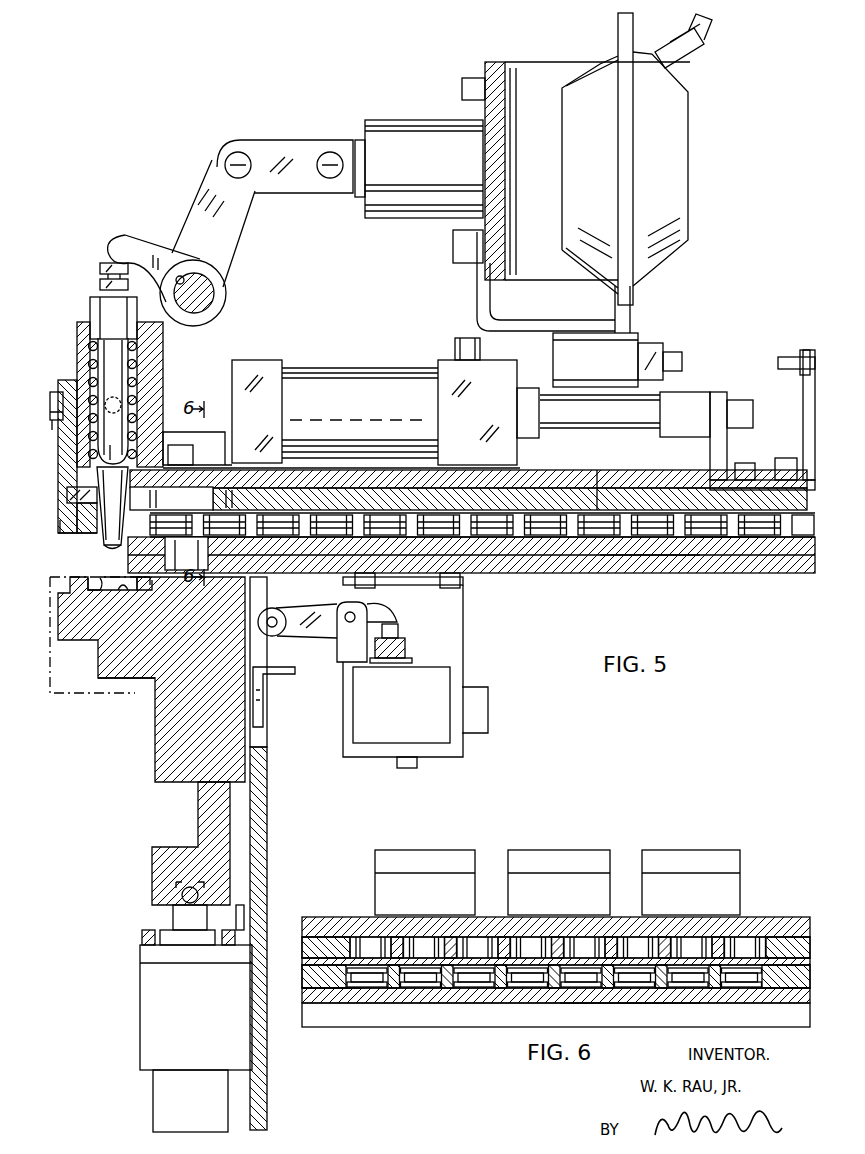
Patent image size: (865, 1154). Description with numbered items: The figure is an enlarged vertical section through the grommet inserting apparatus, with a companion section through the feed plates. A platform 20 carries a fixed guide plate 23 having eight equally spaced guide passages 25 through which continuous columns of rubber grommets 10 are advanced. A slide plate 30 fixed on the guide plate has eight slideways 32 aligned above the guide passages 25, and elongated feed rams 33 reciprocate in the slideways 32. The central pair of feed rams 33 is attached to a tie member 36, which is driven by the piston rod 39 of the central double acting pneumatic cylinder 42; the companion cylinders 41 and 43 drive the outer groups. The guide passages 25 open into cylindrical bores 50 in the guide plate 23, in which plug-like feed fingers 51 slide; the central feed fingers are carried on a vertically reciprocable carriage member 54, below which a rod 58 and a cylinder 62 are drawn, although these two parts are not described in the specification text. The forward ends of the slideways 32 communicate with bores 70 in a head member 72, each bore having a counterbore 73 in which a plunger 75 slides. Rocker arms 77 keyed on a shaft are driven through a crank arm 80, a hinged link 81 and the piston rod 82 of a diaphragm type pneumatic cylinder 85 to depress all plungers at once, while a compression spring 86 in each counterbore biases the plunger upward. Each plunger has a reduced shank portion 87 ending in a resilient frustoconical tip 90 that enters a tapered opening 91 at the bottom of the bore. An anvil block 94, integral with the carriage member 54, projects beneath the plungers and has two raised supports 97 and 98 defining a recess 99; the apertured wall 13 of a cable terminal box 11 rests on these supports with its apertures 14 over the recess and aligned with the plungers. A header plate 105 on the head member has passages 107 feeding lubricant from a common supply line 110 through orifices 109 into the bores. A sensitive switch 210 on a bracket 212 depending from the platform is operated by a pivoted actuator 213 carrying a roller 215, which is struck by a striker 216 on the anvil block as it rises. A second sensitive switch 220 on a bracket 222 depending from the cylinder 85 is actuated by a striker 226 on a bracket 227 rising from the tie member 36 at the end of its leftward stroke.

In FIG. 5, the rubber grommets 10 is at (567, 540).
In FIG. 6, the rubber grommets 10 is at (480, 985).
In FIG. 5, the cable terminal box 11 is at (72, 698).
In FIG. 5, the apertured wall 13 is at (78, 575).
In FIG. 5, the apertures 14 is at (100, 575).
In FIG. 5, the platform 20 is at (766, 575).
In FIG. 6, the platform 20 is at (355, 1028).
In FIG. 5, the guide plate 23 is at (650, 552).
In FIG. 6, the guide plate 23 is at (672, 1005).
In FIG. 5, the guide passages 25 is at (718, 545).
In FIG. 6, the guide passages 25 is at (348, 985).
In FIG. 5, the slide plate 30 is at (600, 483).
In FIG. 6, the slide plate 30 is at (348, 915).
In FIG. 5, the slideways 32 is at (372, 496).
In FIG. 6, the slideways 32 is at (345, 945).
In FIG. 5, the feed rams 33 is at (681, 500).
In FIG. 6, the feed rams 33 is at (487, 940).
In FIG. 5, the tie member 36 is at (710, 450).
In FIG. 5, the piston rod 39 is at (636, 433).
In FIG. 6, the pneumatic cylinder 41 is at (375, 862).
In FIG. 5, the pneumatic cylinder 42 is at (345, 370).
In FIG. 6, the pneumatic cylinder 42 is at (508, 863).
In FIG. 6, the pneumatic cylinder 43 is at (642, 866).
In FIG. 5, the cylindrical bores 50 is at (173, 512).
In FIG. 5, the feed fingers 51 is at (168, 556).
In FIG. 5, the carriage member 54 is at (150, 732).
In FIG. 5, the rod 58 is at (175, 915).
In FIG. 5, the cylinder 62 is at (160, 1090).
In FIG. 5, the bores 70 is at (70, 490).
In FIG. 5, the head member 72 is at (160, 330).
In FIG. 5, the counterbore 73 is at (140, 392).
In FIG. 5, the plungers 75 is at (84, 315).
In FIG. 5, the rocker arms 77 is at (152, 238).
In FIG. 5, the crank arm 80 is at (250, 215).
In FIG. 5, the link 81 is at (299, 147).
In FIG. 5, the piston rod 82 is at (360, 198).
In FIG. 5, the pneumatic cylinder 85 is at (612, 58).
In FIG. 5, the compression spring 86 is at (140, 365).
In FIG. 5, the reduced shank portion 87 is at (100, 355).
In FIG. 5, the frustoconical tip 90 is at (128, 438).
In FIG. 5, the tapered opening 91 is at (121, 545).
In FIG. 5, the anvil block 94 is at (135, 688).
In FIG. 5, the support 97 is at (95, 590).
In FIG. 5, the support 98 is at (150, 585).
In FIG. 5, the recess 99 is at (130, 590).
In FIG. 5, the header plate 105 is at (57, 392).
In FIG. 5, the passage 107 is at (70, 525).
In FIG. 5, the orifice 109 is at (70, 522).
In FIG. 5, the supply line 110 is at (62, 440).
In FIG. 5, the sensitive switch 210 is at (494, 706).
In FIG. 5, the bracket 212 is at (458, 630).
In FIG. 5, the pivoted actuator 213 is at (320, 630).
In FIG. 5, the roller 215 is at (273, 608).
In FIG. 5, the striker 216 is at (290, 674).
In FIG. 5, the sensitive switch 220 is at (637, 336).
In FIG. 5, the bracket 222 is at (475, 297).
In FIG. 5, the striker 226 is at (790, 360).
In FIG. 5, the bracket 227 is at (804, 395).